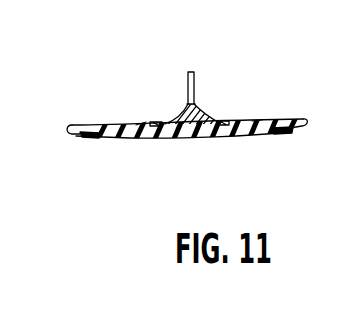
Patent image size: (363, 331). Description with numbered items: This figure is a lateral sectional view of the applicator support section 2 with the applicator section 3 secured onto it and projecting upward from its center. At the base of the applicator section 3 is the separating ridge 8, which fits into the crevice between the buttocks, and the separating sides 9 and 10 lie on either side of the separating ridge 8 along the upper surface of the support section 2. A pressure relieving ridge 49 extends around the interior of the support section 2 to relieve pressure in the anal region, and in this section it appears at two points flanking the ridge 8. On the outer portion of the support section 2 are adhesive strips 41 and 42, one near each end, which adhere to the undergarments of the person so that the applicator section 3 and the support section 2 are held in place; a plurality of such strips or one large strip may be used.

The applicator support section 2 is at (101, 118).
The applicator section 3 is at (186, 70).
The separating ridge 8 is at (198, 121).
The separating side 9 is at (140, 122).
The separating side 10 is at (257, 120).
The adhesive strip 41 is at (90, 138).
The adhesive strip 42 is at (284, 134).
The pressure relieving ridge 49 is at (151, 121).